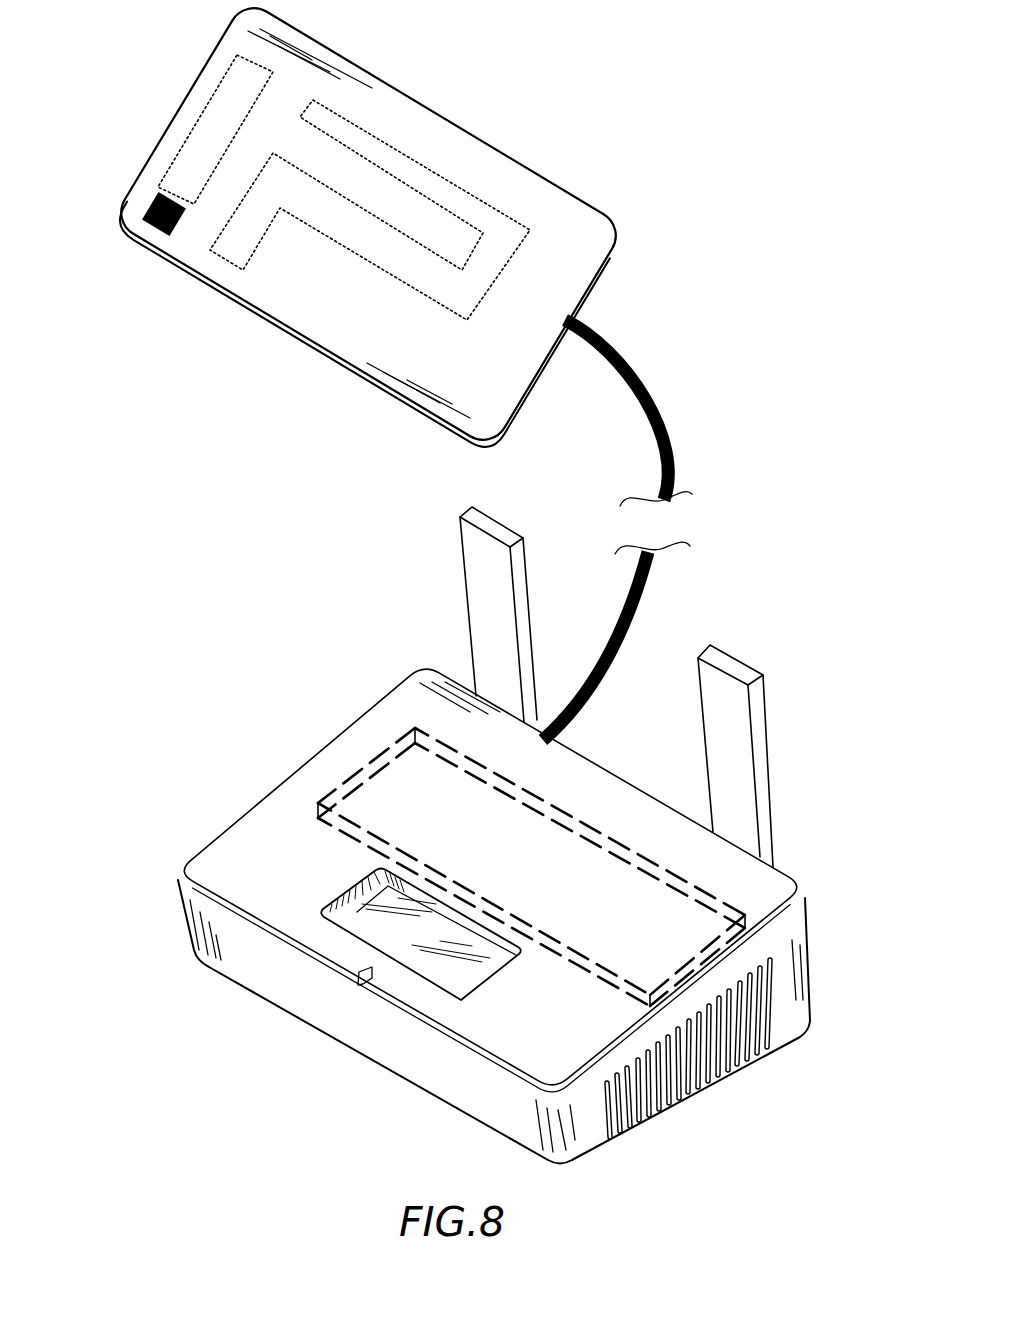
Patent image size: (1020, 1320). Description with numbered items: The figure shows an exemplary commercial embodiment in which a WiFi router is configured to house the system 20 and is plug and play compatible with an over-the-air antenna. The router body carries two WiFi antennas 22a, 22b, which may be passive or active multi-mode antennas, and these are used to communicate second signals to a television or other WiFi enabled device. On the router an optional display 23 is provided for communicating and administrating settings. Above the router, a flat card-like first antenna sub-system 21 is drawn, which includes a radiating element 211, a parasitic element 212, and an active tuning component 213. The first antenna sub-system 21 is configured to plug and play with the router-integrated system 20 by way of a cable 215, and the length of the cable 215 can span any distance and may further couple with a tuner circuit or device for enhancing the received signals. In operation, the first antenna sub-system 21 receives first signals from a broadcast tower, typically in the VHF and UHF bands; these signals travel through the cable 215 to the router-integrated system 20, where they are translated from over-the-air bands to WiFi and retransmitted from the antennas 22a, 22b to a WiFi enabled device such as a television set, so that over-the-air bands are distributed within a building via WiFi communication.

The system 20 is at (252, 738).
The first antenna sub-system 21 is at (677, 216).
The radiating element 211 is at (458, 190).
The parasitic element 212 is at (203, 110).
The active tuning component 213 is at (150, 207).
The cable 215 is at (665, 417).
The WiFi antenna 22a is at (490, 527).
The WiFi antenna 22b is at (731, 668).
The display 23 is at (375, 758).